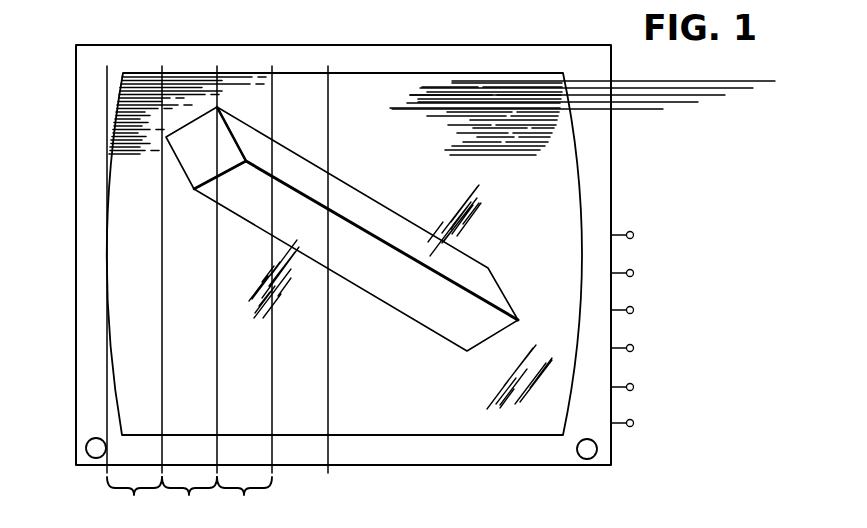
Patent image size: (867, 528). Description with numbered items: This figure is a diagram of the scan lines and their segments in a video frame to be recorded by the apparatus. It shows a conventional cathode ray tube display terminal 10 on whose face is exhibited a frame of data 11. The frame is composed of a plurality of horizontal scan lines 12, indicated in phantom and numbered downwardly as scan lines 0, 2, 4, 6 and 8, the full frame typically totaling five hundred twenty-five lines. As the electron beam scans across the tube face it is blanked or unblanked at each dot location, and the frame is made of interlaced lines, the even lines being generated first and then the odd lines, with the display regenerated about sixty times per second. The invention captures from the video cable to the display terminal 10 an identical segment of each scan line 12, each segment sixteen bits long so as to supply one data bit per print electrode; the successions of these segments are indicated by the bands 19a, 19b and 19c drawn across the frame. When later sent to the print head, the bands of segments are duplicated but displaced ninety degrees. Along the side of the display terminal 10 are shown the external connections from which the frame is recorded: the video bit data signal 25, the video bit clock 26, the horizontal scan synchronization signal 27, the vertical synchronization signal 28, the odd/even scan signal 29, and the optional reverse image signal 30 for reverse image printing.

The cathode ray tube display terminal 10 is at (76, 275).
The frame of data 11 is at (138, 320).
The horizontal scan lines 12 is at (120, 105).
The scan line zero 0 is at (620, 81).
The scan line two 2 is at (594, 89).
The scan line four 4 is at (575, 97).
The scan line six 6 is at (565, 104).
The scan line eight 8 is at (534, 111).
The band of scan line segments 19a is at (134, 497).
The band of scan line segments 19b is at (189, 497).
The band of scan line segments 19c is at (244, 497).
The video bit data signal 25 is at (682, 235).
The video bit clock 26 is at (699, 273).
The horizontal scan synchronization signal 27 is at (704, 310).
The vertical synchronization signal 28 is at (675, 348).
The odd/even scan signal 29 is at (699, 387).
The reverse image signal 30 is at (674, 434).